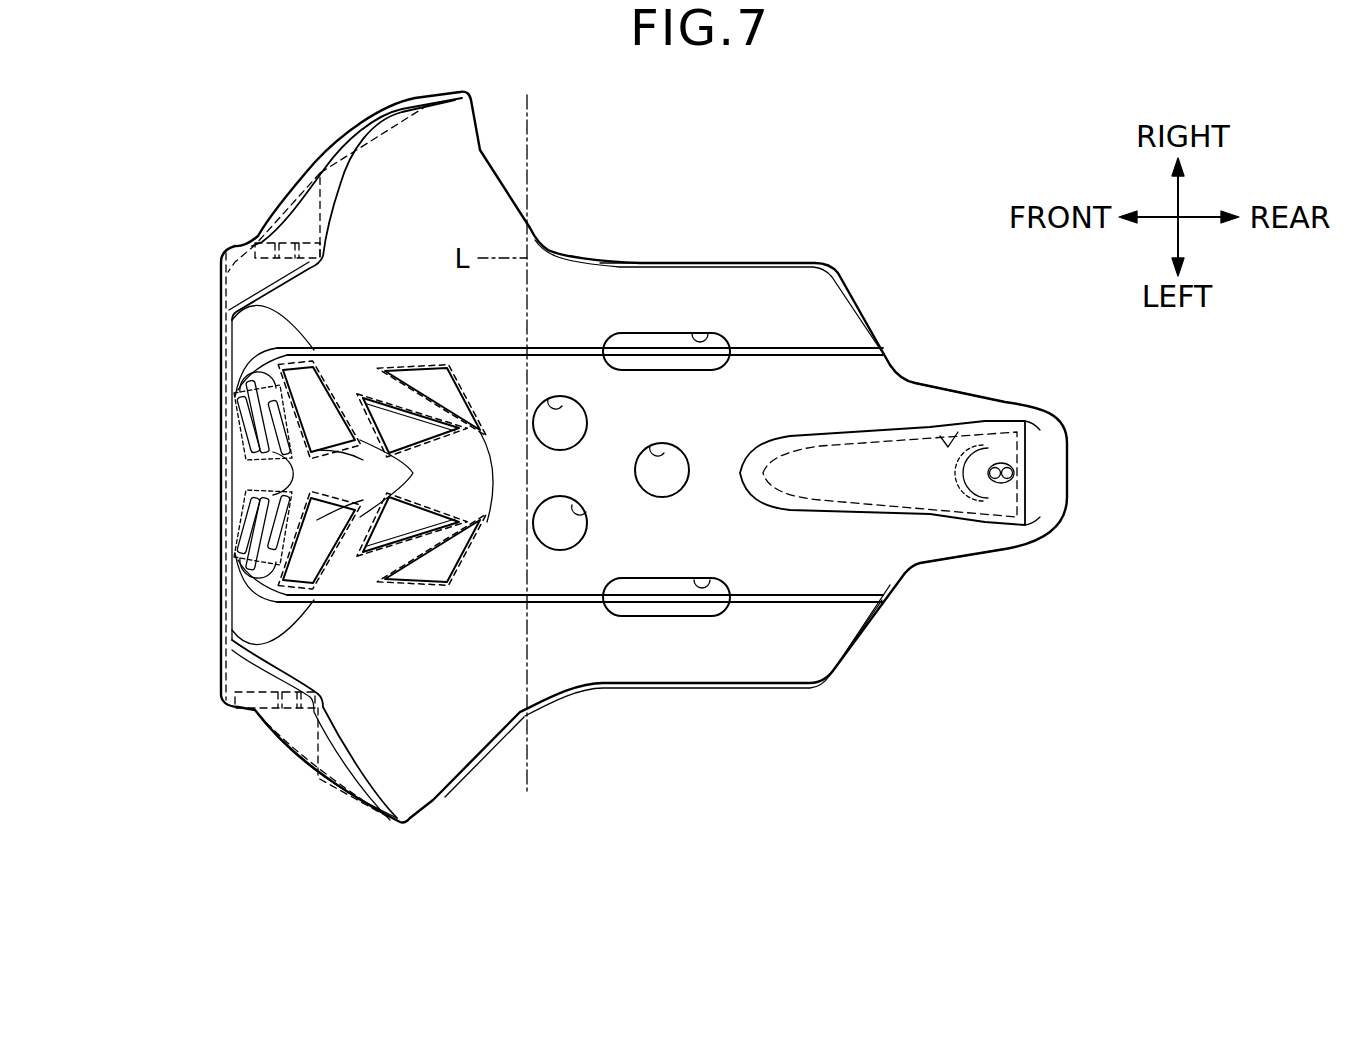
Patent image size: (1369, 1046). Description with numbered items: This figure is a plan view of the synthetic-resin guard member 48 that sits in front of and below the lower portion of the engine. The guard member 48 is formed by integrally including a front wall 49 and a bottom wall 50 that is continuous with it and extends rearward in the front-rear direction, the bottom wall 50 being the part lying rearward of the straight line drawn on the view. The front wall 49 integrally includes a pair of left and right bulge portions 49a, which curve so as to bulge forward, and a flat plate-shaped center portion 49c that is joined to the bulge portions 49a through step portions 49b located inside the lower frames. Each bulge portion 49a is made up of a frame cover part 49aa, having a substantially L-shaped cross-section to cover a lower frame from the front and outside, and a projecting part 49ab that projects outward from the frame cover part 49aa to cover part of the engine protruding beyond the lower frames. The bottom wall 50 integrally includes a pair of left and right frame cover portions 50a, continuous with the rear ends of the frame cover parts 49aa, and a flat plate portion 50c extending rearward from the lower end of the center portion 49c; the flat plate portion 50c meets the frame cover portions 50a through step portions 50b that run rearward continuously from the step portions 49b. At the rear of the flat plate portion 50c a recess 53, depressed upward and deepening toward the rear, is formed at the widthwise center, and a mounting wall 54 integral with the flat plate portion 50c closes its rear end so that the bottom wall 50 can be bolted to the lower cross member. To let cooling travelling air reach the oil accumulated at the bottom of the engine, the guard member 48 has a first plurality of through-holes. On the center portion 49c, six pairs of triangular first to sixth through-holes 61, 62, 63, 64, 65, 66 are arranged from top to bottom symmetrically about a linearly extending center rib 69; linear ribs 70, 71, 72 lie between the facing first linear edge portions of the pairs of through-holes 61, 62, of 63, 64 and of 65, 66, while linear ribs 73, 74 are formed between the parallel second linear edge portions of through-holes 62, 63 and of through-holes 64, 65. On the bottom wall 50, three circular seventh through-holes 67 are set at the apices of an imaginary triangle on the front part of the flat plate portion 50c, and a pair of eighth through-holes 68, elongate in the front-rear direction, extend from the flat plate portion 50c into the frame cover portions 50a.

The guard member 48 is at (530, 877).
The front wall 49 is at (321, 479).
The bulge portions 49a is at (266, 453).
The frame cover parts 49aa is at (220, 275).
The projecting parts 49ab is at (367, 128).
The step portions 49b is at (300, 335).
The center portion 49c is at (340, 575).
The bottom wall 50 is at (683, 688).
The frame cover portions 50a is at (703, 293).
The step portions 50b is at (823, 350).
The flat plate portion 50c is at (920, 410).
The recess 53 is at (958, 432).
The mounting wall 54 is at (1012, 452).
The first through-hole 61 is at (241, 436).
The second through-hole 62 is at (243, 387).
The third through-hole 63 is at (273, 420).
The fourth through-hole 64 is at (320, 405).
The fifth through-hole 65 is at (389, 429).
The sixth through-hole 66 is at (436, 392).
The seventh through-holes 67 is at (560, 405).
The eighth through-holes 68 is at (700, 340).
The center rib 69 is at (243, 466).
The linear rib 70 is at (300, 473).
The linear rib 71 is at (348, 485).
The linear rib 72 is at (501, 446).
The linear rib 73 is at (258, 384).
The linear rib 74 is at (403, 478).